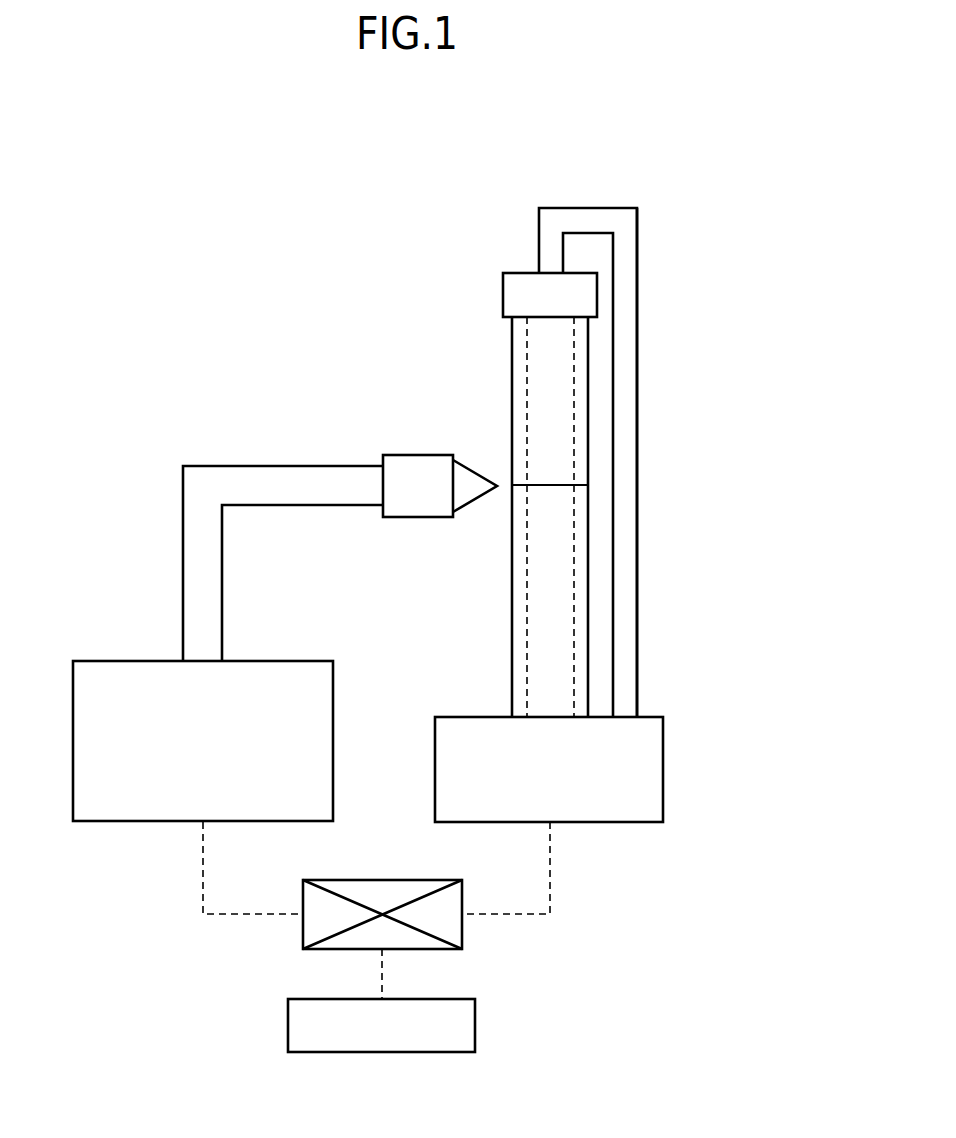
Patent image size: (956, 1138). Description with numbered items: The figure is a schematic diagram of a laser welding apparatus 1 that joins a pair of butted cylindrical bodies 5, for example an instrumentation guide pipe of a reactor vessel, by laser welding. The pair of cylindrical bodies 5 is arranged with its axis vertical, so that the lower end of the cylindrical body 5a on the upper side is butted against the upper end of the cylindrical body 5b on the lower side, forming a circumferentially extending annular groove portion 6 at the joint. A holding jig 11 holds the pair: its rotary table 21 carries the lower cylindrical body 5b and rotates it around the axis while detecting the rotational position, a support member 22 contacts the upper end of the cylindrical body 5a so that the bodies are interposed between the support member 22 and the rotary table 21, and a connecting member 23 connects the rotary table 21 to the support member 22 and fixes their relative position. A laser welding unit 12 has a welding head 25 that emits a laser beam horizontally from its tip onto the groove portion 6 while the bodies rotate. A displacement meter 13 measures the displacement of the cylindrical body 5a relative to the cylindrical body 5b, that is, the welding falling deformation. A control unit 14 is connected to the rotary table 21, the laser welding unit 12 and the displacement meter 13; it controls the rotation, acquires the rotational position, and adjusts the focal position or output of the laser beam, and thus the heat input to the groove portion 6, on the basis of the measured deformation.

The laser welding apparatus 1 is at (318, 247).
The holding jig 11 is at (598, 174).
The laser welding unit 12 is at (134, 452).
The displacement meter 13 is at (476, 1020).
The control unit 14 is at (385, 880).
The rotary table 21 is at (663, 762).
The support member 22 is at (503, 297).
The connecting member 23 is at (638, 405).
The welding head 25 is at (476, 471).
The cylindrical bodies 5 is at (550, 517).
The cylindrical body of the upper side 5a is at (511, 368).
The cylindrical body of the lower side 5b is at (511, 648).
The groove portion 6 is at (590, 485).